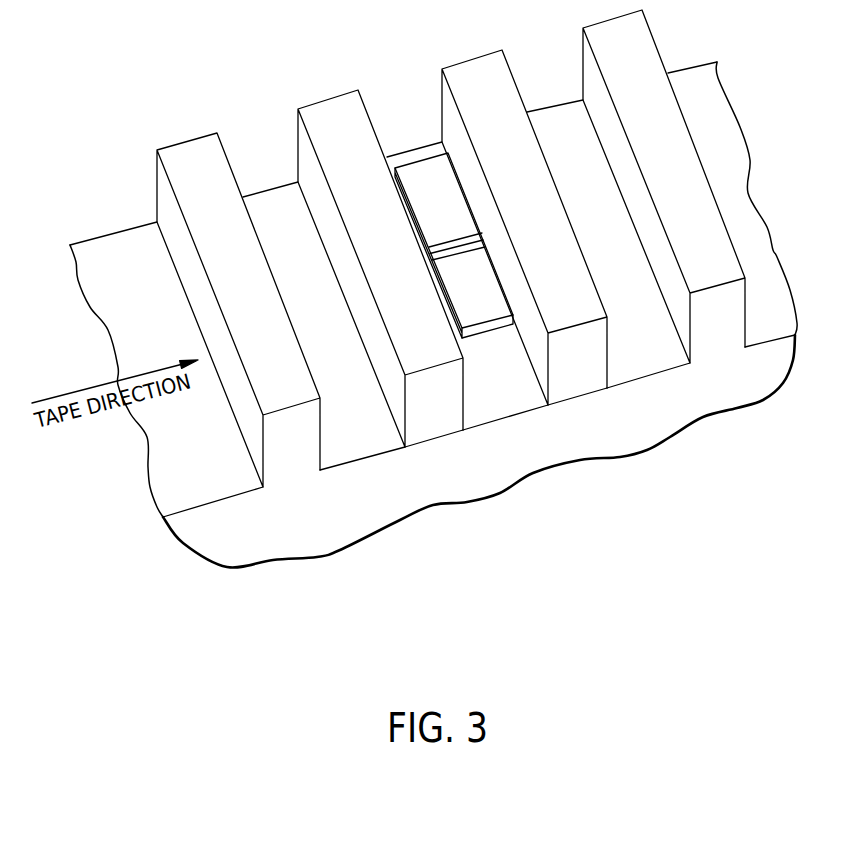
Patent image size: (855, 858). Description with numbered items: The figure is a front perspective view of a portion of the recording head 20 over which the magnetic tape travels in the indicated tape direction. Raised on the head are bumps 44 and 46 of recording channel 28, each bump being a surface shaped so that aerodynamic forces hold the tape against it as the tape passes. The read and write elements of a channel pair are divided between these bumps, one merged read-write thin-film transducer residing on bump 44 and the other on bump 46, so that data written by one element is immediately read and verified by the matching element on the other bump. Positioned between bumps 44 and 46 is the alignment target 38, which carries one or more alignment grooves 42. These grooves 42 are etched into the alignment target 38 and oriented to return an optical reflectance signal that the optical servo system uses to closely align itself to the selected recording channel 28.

The recording head 20 is at (118, 245).
The recording channel 28 is at (610, 393).
The alignment target 38 is at (430, 180).
The alignment grooves 42 is at (465, 263).
The bump 44 is at (333, 113).
The bump 46 is at (480, 70).